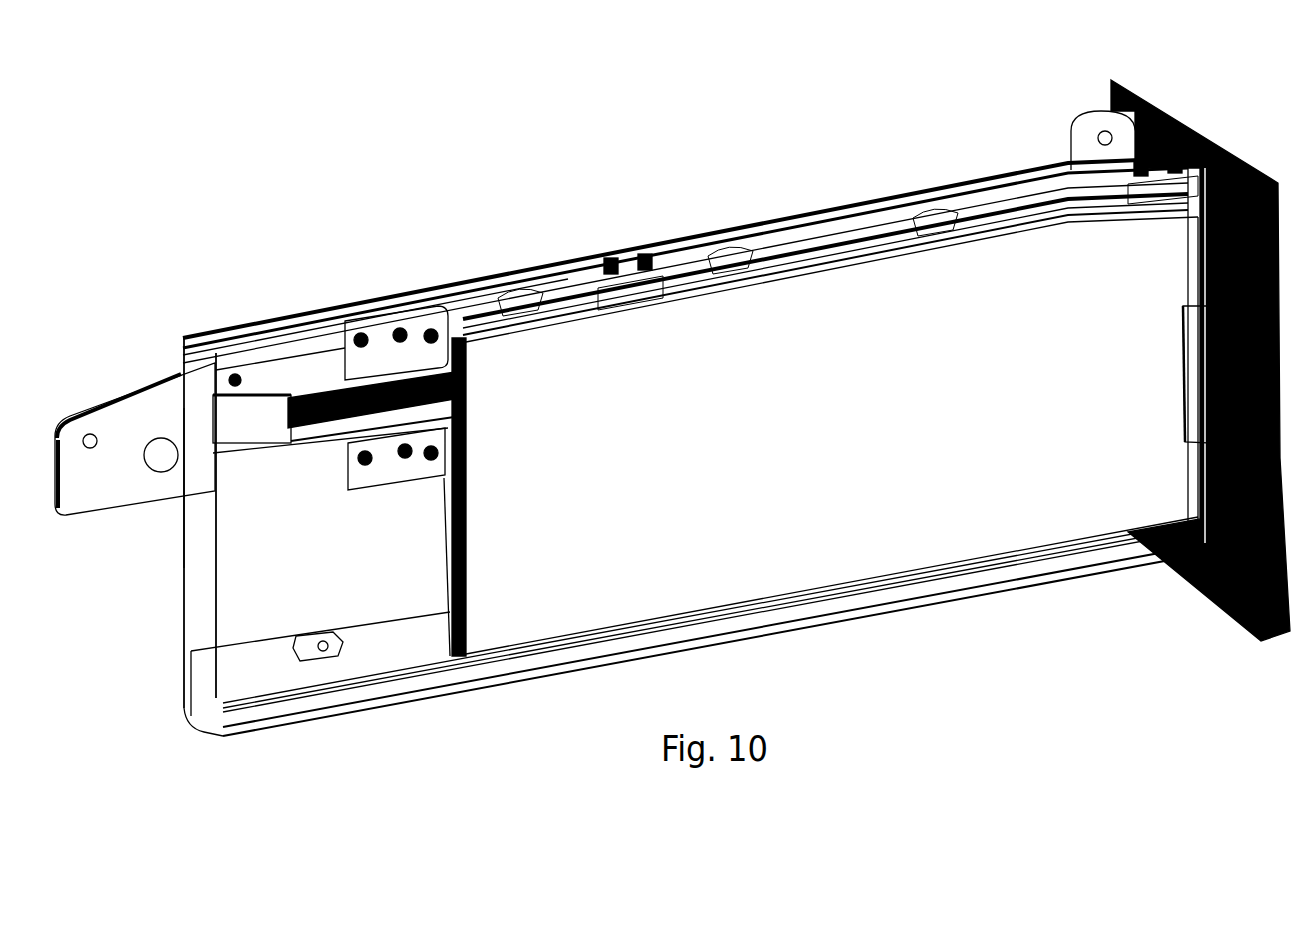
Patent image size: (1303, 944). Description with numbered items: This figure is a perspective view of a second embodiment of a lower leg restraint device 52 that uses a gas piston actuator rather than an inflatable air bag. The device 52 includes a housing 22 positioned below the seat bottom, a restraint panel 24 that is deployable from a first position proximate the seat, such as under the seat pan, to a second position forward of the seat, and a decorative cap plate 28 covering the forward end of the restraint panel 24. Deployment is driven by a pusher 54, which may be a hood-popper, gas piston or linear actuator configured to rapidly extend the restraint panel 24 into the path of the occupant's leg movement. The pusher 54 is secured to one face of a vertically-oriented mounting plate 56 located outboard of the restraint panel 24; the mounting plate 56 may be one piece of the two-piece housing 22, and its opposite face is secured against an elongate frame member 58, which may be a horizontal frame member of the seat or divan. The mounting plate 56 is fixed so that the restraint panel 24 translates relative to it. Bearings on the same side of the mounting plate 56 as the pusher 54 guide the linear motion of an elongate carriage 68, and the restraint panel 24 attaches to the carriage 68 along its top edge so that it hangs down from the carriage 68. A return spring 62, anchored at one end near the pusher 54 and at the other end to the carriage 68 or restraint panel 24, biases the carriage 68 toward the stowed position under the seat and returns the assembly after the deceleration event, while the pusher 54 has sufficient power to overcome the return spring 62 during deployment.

The housing 22 is at (213, 610).
The restraint panel 24 is at (447, 548).
The decorative cap plate 28 is at (1178, 104).
The lower leg restraint device 52 is at (440, 160).
The pusher 54 is at (372, 410).
The mounting plate 56 is at (190, 552).
The elongate frame member 58 is at (104, 407).
The return spring 62 is at (323, 395).
The carriage 68 is at (560, 308).